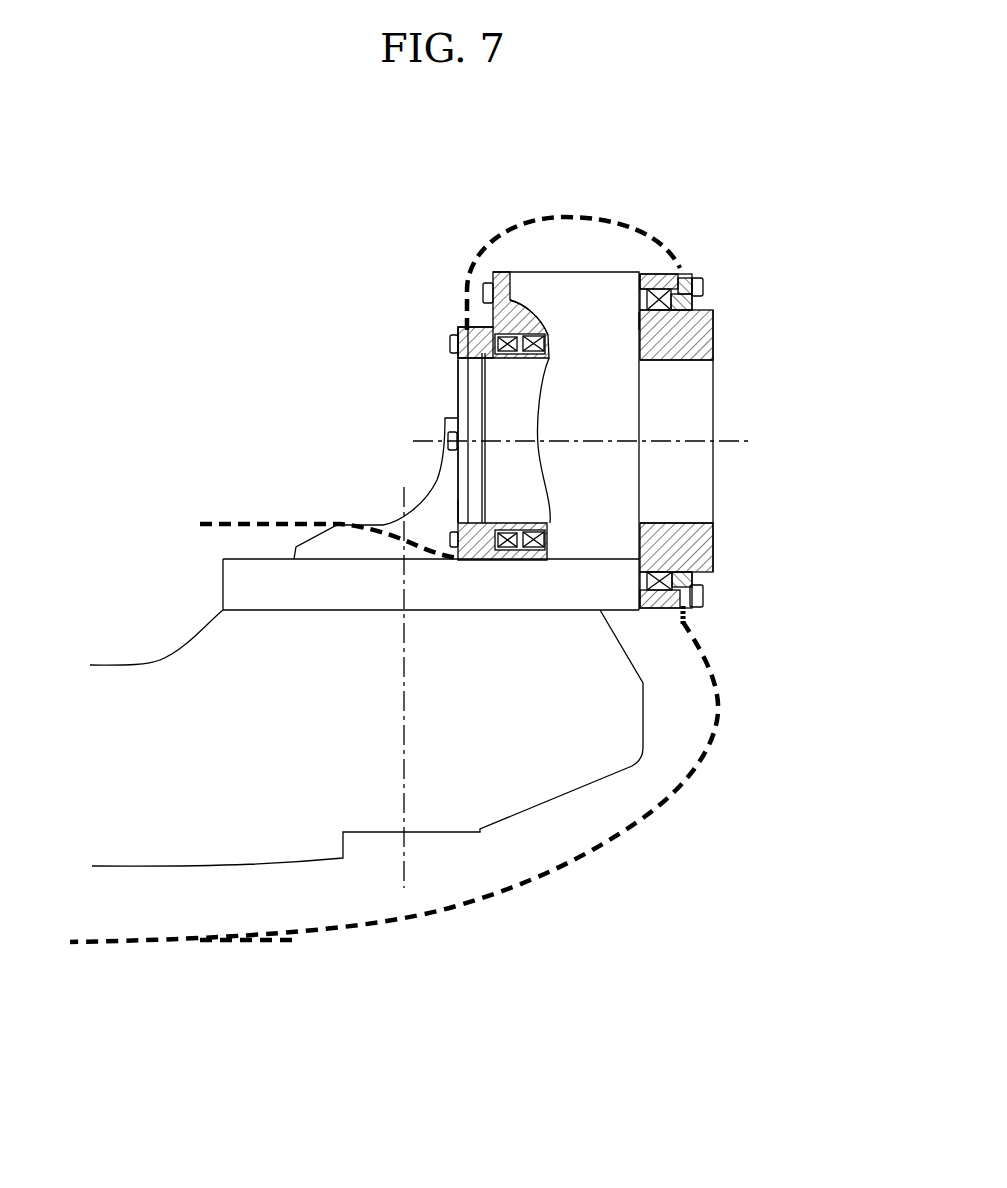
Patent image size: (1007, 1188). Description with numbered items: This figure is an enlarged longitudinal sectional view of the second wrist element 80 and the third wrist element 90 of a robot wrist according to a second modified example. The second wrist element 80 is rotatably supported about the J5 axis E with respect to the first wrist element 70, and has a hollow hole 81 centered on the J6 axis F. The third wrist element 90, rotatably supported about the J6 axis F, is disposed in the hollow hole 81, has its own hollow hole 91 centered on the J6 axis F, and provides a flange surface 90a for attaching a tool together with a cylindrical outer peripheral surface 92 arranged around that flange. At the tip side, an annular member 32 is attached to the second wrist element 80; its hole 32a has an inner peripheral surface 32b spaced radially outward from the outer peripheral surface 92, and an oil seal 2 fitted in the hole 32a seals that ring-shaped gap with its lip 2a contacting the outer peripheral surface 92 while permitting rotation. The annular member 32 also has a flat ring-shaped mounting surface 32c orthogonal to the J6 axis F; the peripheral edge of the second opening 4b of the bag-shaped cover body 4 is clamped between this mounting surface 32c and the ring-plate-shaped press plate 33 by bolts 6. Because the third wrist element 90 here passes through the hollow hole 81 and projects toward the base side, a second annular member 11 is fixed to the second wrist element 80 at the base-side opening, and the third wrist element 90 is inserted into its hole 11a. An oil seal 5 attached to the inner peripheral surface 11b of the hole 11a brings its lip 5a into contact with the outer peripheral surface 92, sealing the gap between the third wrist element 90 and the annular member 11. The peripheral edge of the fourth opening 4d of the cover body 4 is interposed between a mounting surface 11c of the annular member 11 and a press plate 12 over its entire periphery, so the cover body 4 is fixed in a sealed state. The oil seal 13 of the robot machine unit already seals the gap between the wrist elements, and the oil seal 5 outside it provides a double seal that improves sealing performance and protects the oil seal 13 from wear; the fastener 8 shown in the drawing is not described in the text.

The oil seal 2 is at (640, 302).
The lip 2a is at (660, 315).
The cover body 4 is at (457, 912).
The second opening 4b is at (686, 622).
The fourth opening 4d is at (470, 299).
The oil seal 5 is at (505, 560).
The lip 5a is at (506, 523).
The bolts 6 is at (703, 595).
The bolt 8 is at (450, 345).
The annular member 11 is at (512, 270).
The hole 11a is at (445, 383).
The inner peripheral surface 11b is at (512, 362).
The mounting surface 11c is at (455, 545).
The press plate 12 is at (458, 320).
The oil seal 13 is at (540, 523).
The annular member 32 is at (650, 255).
The hole 32a is at (626, 325).
The inner peripheral surface 32b is at (640, 298).
The mounting surface 32c is at (690, 280).
The press plate 33 is at (703, 289).
The first wrist element 70 is at (253, 894).
The second wrist element 80 is at (210, 575).
The hollow hole 81 is at (545, 330).
The third wrist element 90 is at (732, 519).
The flange surface 90a is at (713, 540).
The hollow hole 91 is at (693, 362).
The outer peripheral surface 92 is at (640, 582).
The J5 axis E is at (404, 764).
The J6 axis F is at (590, 441).